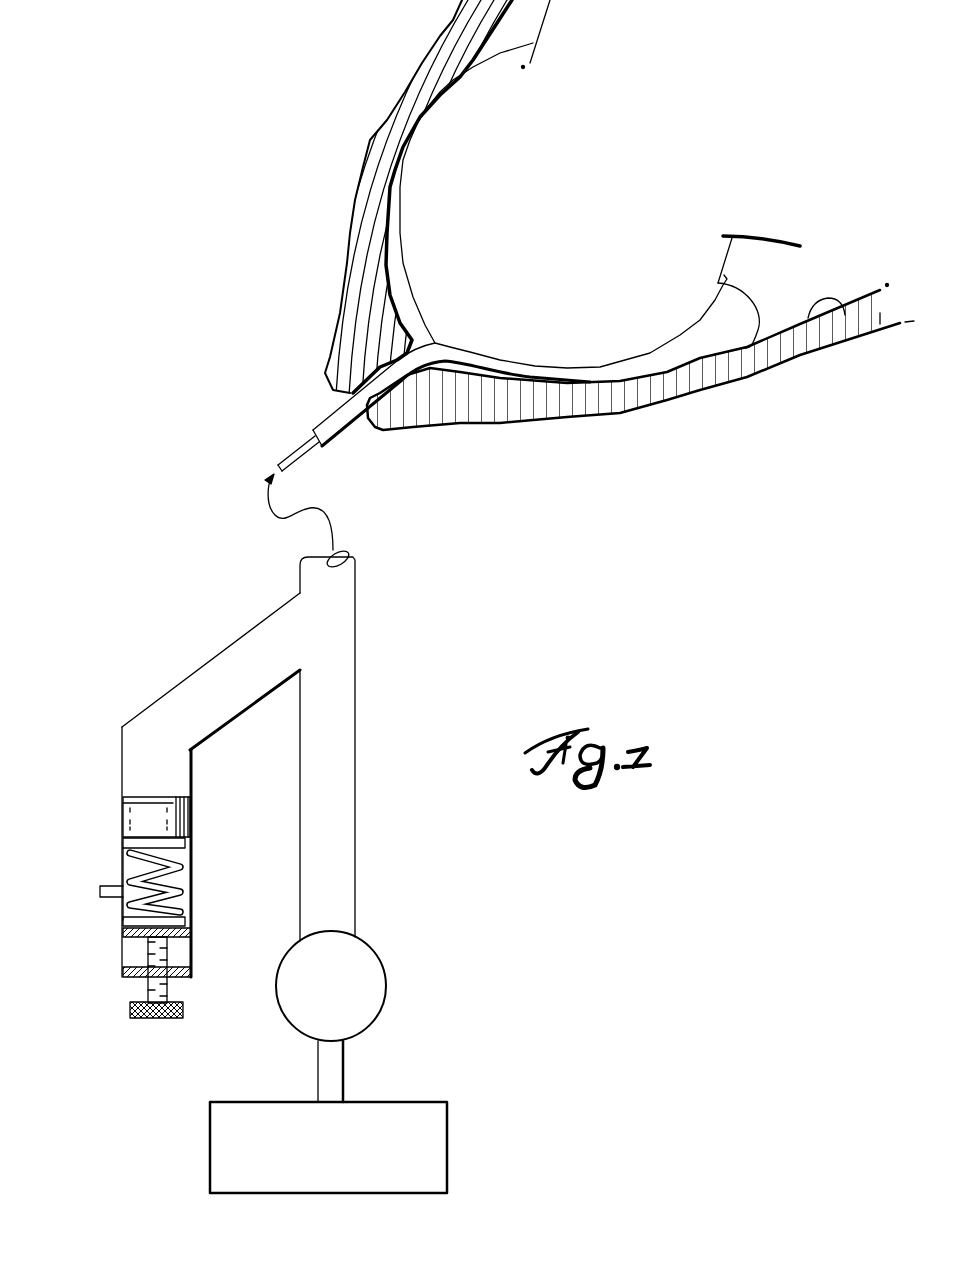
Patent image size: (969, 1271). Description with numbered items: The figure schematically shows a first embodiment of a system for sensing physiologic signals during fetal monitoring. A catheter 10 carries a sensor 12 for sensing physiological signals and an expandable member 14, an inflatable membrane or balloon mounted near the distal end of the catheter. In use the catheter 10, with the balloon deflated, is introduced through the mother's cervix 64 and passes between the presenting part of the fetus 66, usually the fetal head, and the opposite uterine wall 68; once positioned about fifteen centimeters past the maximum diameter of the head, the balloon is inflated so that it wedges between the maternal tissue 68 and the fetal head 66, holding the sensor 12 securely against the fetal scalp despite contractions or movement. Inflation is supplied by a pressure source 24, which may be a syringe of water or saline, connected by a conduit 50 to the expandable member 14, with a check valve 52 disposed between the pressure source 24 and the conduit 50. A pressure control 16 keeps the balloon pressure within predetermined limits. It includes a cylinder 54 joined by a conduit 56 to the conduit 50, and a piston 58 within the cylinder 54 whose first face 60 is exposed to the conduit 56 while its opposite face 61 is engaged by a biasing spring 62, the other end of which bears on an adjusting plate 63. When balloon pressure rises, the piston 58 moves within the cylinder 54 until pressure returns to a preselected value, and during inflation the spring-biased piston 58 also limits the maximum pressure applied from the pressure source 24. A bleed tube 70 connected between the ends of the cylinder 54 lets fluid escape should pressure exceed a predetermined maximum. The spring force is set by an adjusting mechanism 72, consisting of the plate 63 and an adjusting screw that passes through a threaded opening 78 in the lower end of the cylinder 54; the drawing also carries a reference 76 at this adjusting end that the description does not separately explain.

The catheter 10 is at (430, 332).
The sensor 12 is at (694, 335).
The expandable member 14 is at (735, 308).
The pressure control 16 is at (98, 777).
The pressure source 24 is at (462, 1079).
The conduit 50 is at (345, 683).
The check valve 52 is at (381, 980).
The cylinder 54 is at (192, 852).
The conduit 56 is at (265, 612).
The piston 58 is at (192, 807).
The first face 60 is at (153, 798).
The opposite face 61 is at (133, 843).
The biasing spring 62 is at (187, 878).
The adjusting plate 63 is at (192, 940).
The cervix 64 is at (567, 390).
The fetus 66 is at (590, 210).
The uterine wall 68 is at (808, 318).
The bleed tube 70 is at (107, 897).
The adjusting mechanism 72 is at (100, 968).
The adjusting knob 76 is at (137, 1020).
The threaded opening 78 is at (180, 983).